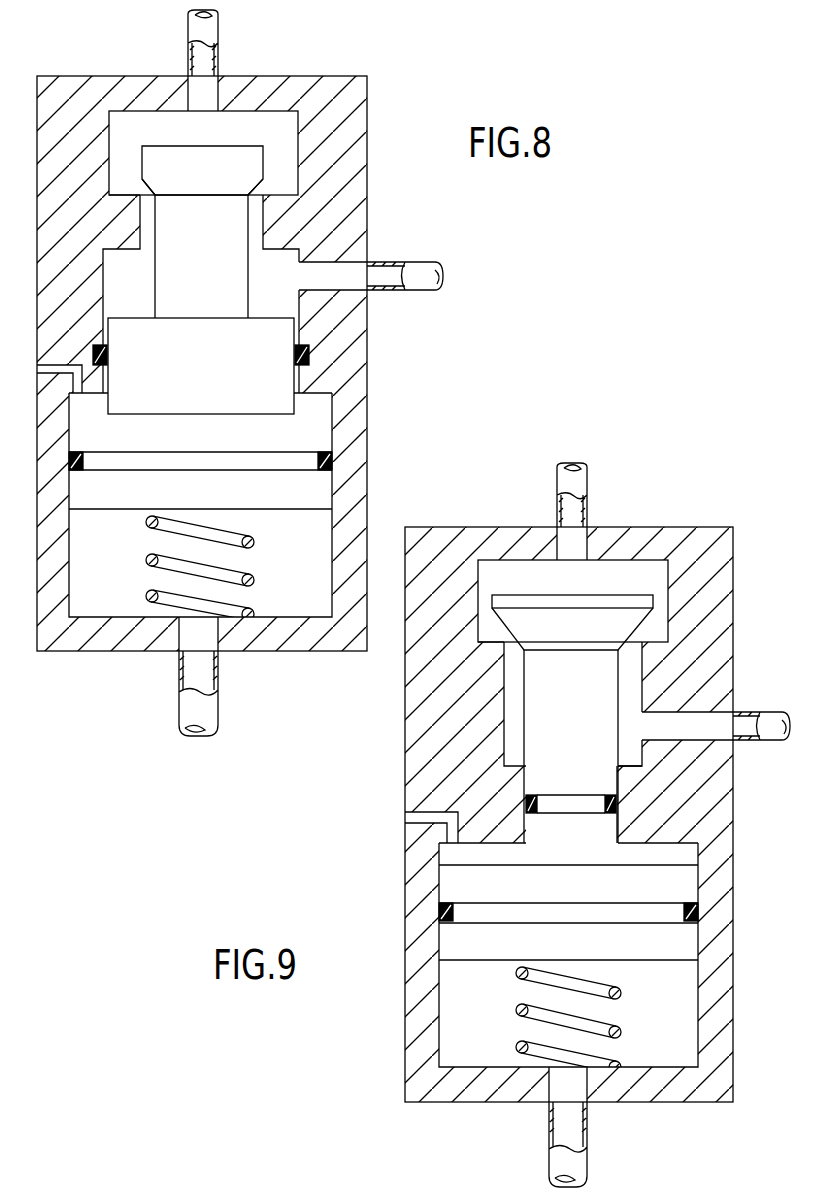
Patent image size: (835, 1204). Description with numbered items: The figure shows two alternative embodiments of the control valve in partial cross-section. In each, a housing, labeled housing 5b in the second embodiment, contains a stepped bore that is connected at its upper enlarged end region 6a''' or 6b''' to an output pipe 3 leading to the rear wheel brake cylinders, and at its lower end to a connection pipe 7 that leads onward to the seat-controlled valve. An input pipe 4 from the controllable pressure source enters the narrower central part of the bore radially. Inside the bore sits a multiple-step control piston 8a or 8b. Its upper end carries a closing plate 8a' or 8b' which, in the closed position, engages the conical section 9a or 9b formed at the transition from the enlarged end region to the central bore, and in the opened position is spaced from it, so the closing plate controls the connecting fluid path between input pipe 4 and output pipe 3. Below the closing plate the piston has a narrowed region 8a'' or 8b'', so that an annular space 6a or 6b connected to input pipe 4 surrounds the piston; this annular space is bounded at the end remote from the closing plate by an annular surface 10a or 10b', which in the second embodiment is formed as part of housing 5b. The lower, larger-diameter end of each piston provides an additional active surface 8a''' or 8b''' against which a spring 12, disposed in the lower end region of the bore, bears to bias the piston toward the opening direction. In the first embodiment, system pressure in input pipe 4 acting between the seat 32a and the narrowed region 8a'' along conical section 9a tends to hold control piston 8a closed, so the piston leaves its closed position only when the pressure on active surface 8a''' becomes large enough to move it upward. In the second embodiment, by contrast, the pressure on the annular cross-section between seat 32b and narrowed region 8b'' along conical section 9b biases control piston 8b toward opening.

In FIG. 8, the output pipe 3 is at (210, 63).
In FIG. 9, the output pipe 3 is at (575, 515).
In FIG. 8, the input pipe 4 is at (423, 270).
In FIG. 9, the input pipe 4 is at (770, 715).
In FIG. 9, the housing 5b is at (718, 775).
In FIG. 8, the annular space 6a is at (179, 294).
In FIG. 8, the bore end region 6a''' is at (212, 138).
In FIG. 9, the annular space 6b is at (540, 704).
In FIG. 9, the bore end region 6b''' is at (578, 587).
In FIG. 8, the connection pipe 7 is at (203, 675).
In FIG. 9, the connection pipe 7 is at (578, 1155).
In FIG. 8, the control piston 8a is at (200, 296).
In FIG. 8, the closing plate 8a' is at (201, 113).
In FIG. 8, the narrowed region 8a'' is at (201, 256).
In FIG. 8, the active surface 8a''' is at (200, 477).
In FIG. 9, the control piston 8b is at (568, 790).
In FIG. 9, the closing plate 8b' is at (572, 586).
In FIG. 9, the narrowed region 8b'' is at (571, 746).
In FIG. 9, the active surface 8b''' is at (568, 929).
In FIG. 8, the conical section 9a is at (252, 186).
In FIG. 9, the conical section 9b is at (632, 622).
In FIG. 8, the annular surface 10a is at (262, 316).
In FIG. 9, the annular surface 10b' is at (652, 800).
In FIG. 8, the spring 12 is at (232, 572).
In FIG. 9, the spring 12 is at (598, 1023).
In FIG. 8, the seat 32a is at (138, 197).
In FIG. 9, the seat 32b is at (502, 647).